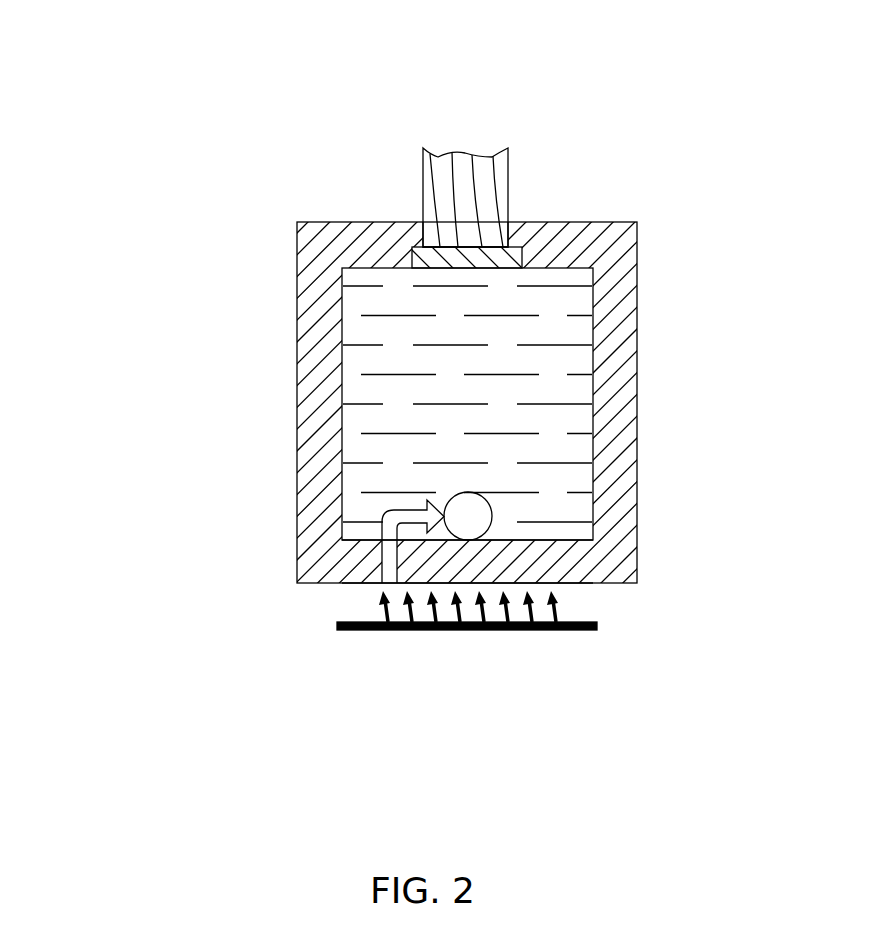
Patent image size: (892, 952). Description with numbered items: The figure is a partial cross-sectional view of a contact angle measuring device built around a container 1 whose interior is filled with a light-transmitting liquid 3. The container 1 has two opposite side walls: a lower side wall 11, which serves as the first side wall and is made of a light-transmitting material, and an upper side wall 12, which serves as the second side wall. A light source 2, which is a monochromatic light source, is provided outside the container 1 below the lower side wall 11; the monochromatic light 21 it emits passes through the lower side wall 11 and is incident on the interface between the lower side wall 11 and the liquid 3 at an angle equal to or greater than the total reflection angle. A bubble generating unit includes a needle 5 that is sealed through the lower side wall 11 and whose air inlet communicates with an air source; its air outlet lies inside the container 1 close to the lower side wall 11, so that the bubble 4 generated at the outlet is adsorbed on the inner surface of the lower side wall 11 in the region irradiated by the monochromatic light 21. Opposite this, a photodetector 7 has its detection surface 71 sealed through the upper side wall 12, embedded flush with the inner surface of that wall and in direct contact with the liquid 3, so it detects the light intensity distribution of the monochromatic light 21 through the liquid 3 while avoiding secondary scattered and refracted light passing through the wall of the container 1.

The container 1 is at (297, 417).
The lower side wall 11 is at (570, 558).
The upper side wall 12 is at (563, 247).
The light source 2 is at (380, 630).
The monochromatic light 21 is at (383, 608).
The liquid 3 is at (553, 398).
The bubble 4 is at (468, 517).
The needle 5 is at (390, 518).
The photodetector 7 is at (455, 175).
The detection surface 71 is at (423, 247).